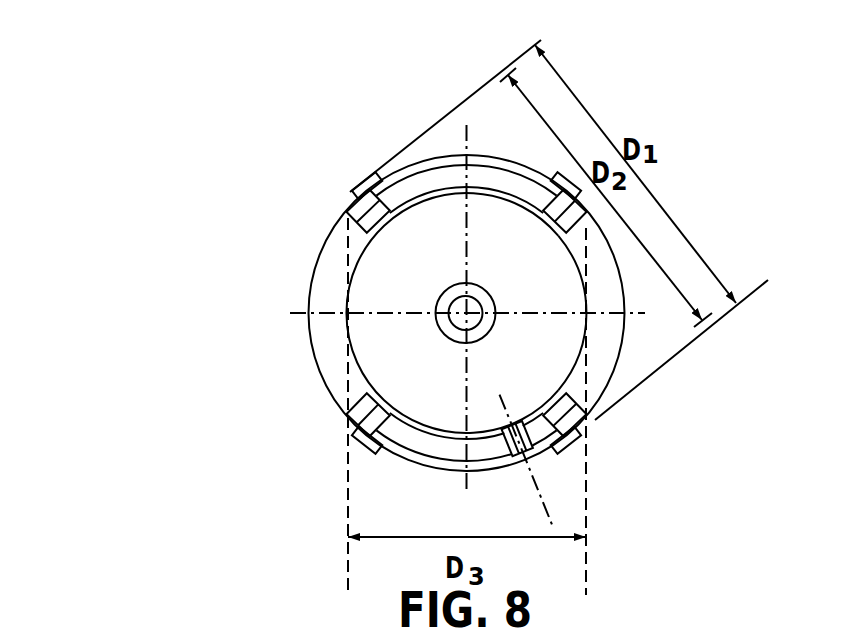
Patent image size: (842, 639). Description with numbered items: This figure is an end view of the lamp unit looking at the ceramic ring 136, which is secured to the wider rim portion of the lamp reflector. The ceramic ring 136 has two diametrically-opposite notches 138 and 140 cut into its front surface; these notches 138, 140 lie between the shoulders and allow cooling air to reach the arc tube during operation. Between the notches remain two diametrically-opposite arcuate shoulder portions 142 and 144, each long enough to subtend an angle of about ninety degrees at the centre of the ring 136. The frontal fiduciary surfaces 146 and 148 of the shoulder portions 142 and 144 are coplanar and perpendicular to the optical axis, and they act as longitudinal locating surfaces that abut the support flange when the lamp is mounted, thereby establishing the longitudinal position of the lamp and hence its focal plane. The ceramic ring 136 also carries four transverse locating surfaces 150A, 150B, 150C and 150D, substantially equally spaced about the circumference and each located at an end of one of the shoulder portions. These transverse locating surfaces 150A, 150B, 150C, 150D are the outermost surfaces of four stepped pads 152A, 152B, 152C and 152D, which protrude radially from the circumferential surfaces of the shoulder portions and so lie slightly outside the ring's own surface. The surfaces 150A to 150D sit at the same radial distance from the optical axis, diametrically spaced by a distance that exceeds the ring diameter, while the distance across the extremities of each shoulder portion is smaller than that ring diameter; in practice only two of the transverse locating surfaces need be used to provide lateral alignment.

The ceramic ring 136 is at (307, 298).
The notch 138 is at (332, 362).
The notch 140 is at (612, 345).
The arcuate shoulder portion 142 is at (336, 226).
The arcuate shoulder portion 144 is at (487, 452).
The frontal fiduciary surface 146 is at (443, 182).
The frontal fiduciary surface 148 is at (441, 455).
The transverse locating surface 150A is at (367, 203).
The transverse locating surface 150B is at (567, 180).
The transverse locating surface 150C is at (570, 438).
The transverse locating surface 150D is at (364, 435).
The stepped pad 152A is at (360, 180).
The stepped pad 152B is at (607, 206).
The stepped pad 152C is at (582, 452).
The stepped pad 152D is at (356, 433).